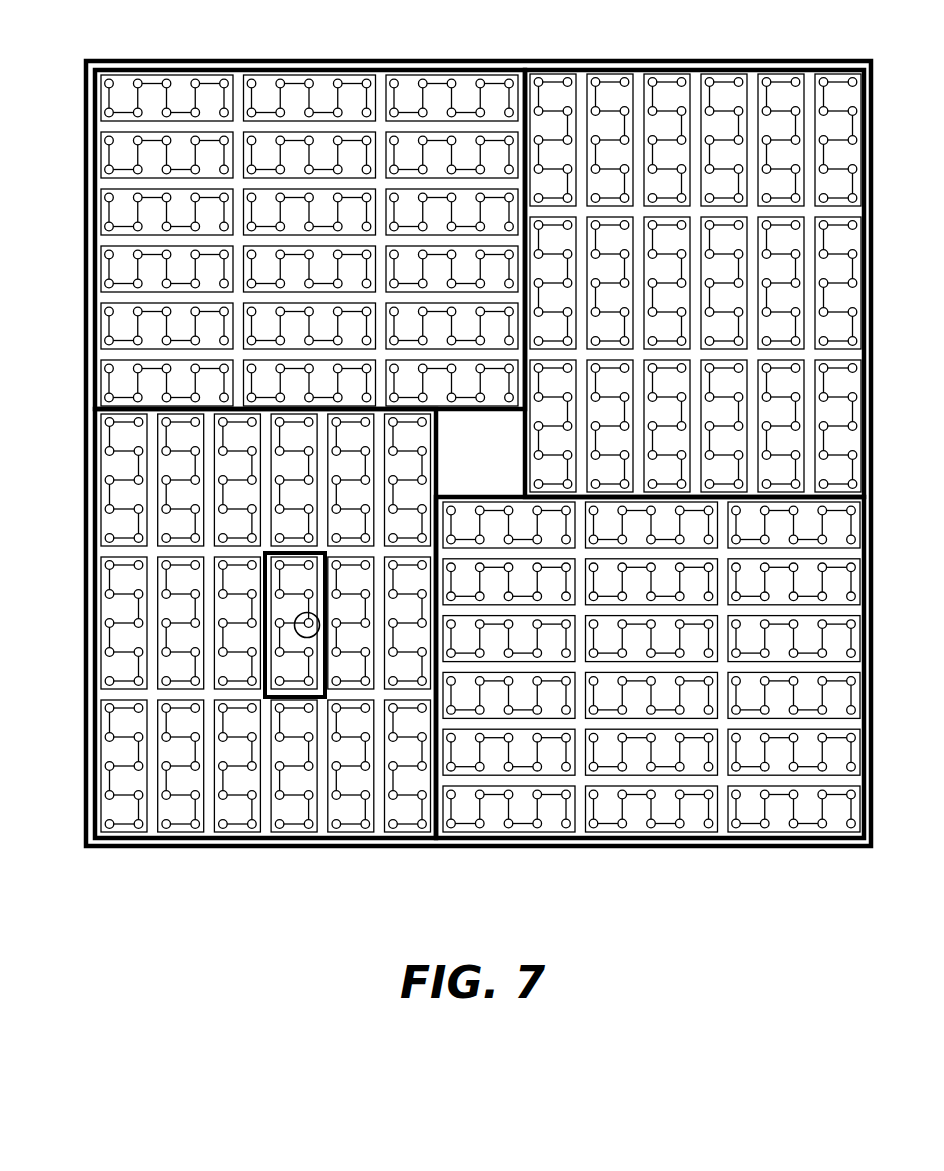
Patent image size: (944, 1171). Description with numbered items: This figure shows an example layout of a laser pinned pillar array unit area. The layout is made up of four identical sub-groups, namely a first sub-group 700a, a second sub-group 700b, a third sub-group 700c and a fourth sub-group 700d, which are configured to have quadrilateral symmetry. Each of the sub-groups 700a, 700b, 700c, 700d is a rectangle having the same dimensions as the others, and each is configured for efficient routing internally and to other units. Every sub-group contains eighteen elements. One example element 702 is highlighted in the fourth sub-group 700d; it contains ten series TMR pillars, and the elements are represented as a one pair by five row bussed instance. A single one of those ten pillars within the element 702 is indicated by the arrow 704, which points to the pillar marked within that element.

The first sub-group 700a is at (298, 70).
The second sub-group 700b is at (688, 70).
The third sub-group 700c is at (665, 840).
The fourth sub-group 700d is at (270, 840).
The element 702 is at (265, 695).
The arrow 704 is at (288, 637).